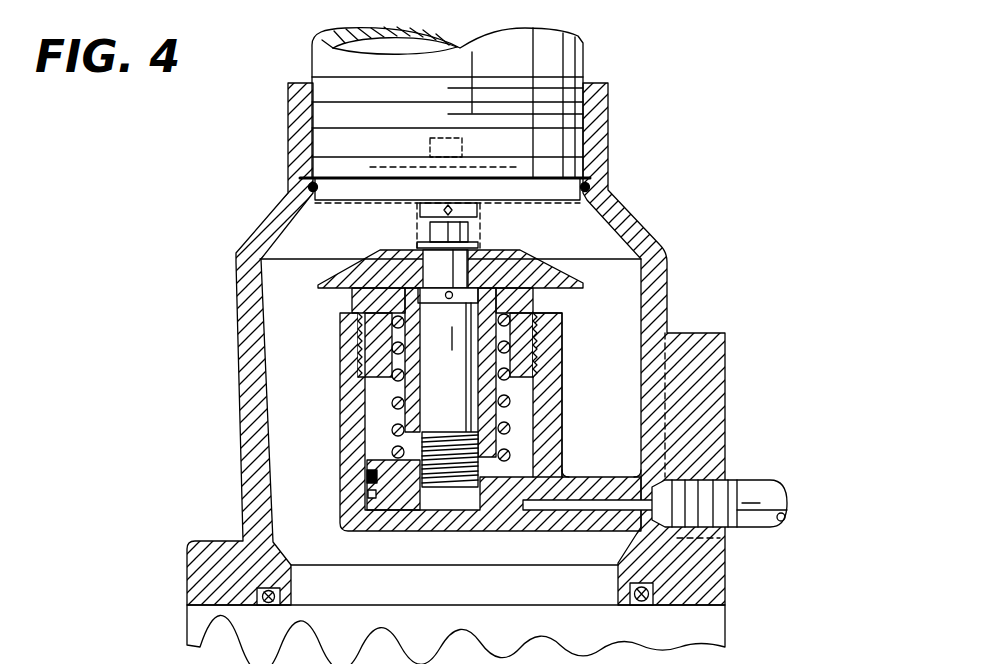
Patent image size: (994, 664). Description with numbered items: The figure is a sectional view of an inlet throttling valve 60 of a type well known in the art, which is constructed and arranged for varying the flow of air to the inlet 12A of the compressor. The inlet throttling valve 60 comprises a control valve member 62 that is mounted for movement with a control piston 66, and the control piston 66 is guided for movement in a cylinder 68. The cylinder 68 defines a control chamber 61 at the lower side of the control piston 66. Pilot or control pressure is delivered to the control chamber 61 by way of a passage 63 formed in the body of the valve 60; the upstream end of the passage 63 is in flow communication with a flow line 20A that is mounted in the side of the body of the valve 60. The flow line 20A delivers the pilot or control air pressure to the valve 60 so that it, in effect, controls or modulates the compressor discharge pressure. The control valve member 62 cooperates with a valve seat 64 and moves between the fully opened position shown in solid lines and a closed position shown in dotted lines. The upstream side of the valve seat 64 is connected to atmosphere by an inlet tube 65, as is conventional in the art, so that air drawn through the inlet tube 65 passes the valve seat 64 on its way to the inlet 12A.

The inlet throttling valve 60 is at (645, 222).
The control chamber 61 is at (522, 528).
The control valve member 62 is at (368, 249).
The passage 63 is at (594, 500).
The valve seat 64 is at (313, 188).
The inlet tube 65 is at (568, 60).
The control piston 66 is at (377, 460).
The cylinder 68 is at (534, 401).
The flow line 20A is at (765, 480).
The inlet 12A is at (728, 617).